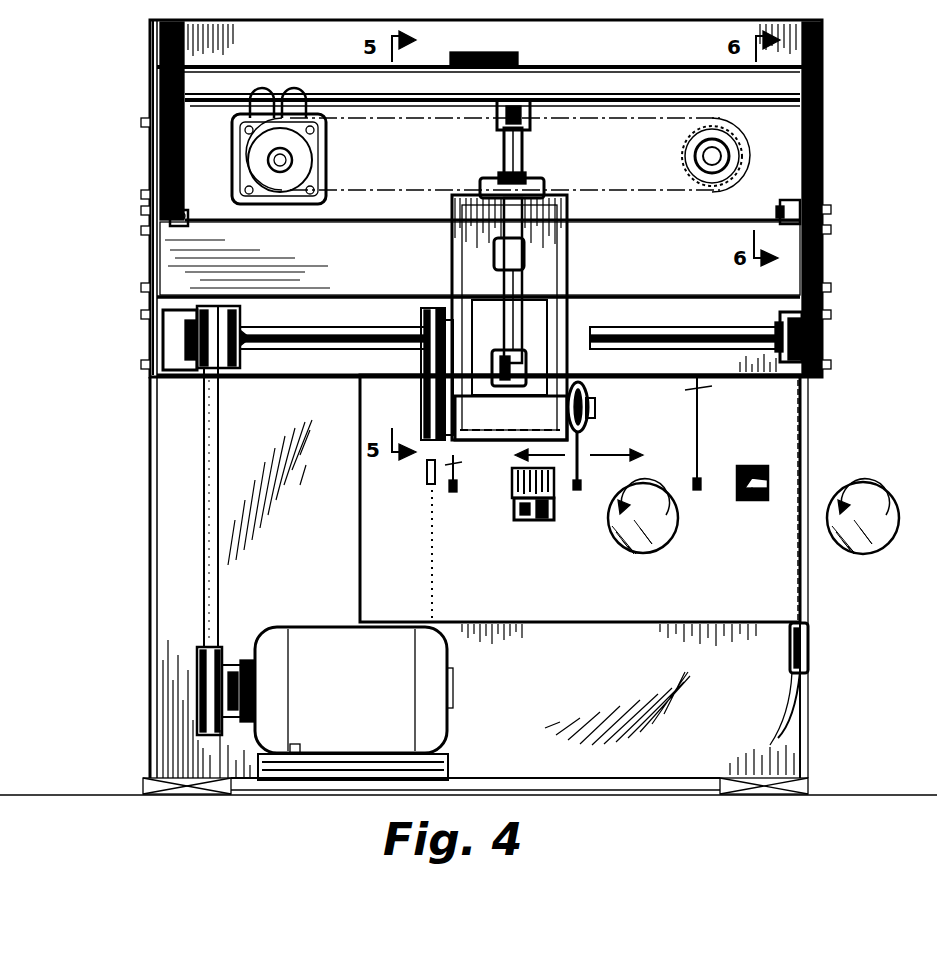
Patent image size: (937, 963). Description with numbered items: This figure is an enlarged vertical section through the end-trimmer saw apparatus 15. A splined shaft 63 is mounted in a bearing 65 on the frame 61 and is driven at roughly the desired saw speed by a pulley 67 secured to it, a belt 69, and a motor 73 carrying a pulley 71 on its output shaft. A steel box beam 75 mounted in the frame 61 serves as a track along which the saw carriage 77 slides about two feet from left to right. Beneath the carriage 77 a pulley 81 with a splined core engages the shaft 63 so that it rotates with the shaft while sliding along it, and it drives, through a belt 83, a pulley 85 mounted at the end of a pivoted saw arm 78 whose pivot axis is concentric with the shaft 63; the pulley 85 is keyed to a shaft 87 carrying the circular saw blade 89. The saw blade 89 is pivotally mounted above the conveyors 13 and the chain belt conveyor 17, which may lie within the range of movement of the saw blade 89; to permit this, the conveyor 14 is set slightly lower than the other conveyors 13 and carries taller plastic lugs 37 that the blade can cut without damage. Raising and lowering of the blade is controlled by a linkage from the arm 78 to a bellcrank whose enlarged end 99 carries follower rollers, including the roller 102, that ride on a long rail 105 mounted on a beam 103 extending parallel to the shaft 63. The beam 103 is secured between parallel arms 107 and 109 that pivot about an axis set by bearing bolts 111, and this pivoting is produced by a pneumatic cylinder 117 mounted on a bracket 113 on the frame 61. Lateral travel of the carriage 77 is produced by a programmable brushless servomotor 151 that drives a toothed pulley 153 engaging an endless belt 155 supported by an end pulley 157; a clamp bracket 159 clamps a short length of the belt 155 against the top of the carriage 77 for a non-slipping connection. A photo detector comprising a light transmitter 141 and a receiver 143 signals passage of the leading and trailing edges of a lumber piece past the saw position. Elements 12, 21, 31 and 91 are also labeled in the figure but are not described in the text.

The cleaning apparatus 15 is at (140, 263).
The parallel arm 109 is at (152, 63).
The parallel arm 107 is at (818, 66).
The pneumatic cylinder 117 is at (497, 58).
The beam 103 is at (584, 68).
The rail 105 is at (375, 105).
The endless belt 155 is at (683, 128).
The end pulley 157 is at (690, 163).
The servomotor 151 is at (326, 150).
The toothed pulley 153 is at (310, 160).
The roller 102 is at (518, 100).
The enlarged end 99 is at (504, 128).
The clamp bracket 159 is at (523, 180).
The bracket 113 is at (186, 218).
The bearing bolts 111 is at (782, 212).
The box beam 75 is at (322, 276).
The saw carriage 77 is at (548, 272).
The saw arm 78 is at (516, 436).
The pulley 81 is at (422, 318).
The belt 83 is at (420, 370).
The pulley 85 is at (420, 402).
The splined shaft 63 is at (303, 325).
The bearing 65 is at (168, 325).
The light transmitter 141 is at (822, 346).
The pulley 67 is at (232, 362).
The belt 69 is at (211, 576).
The pulley 71 is at (196, 670).
The motor 73 is at (333, 628).
The frame 61 is at (307, 531).
The shaft 87 is at (592, 408).
The roller axle 91 is at (594, 420).
The circular saw blade 89 is at (582, 458).
The special lugs 37 is at (512, 494).
The conveyor 14 is at (520, 516).
The chain belt conveyor 17 is at (536, 518).
The rotating roller 21 is at (668, 533).
The mounting block 31 is at (760, 466).
The lower jaw 12 is at (742, 500).
The conveyors 13 is at (752, 500).
The receiver 143 is at (810, 650).